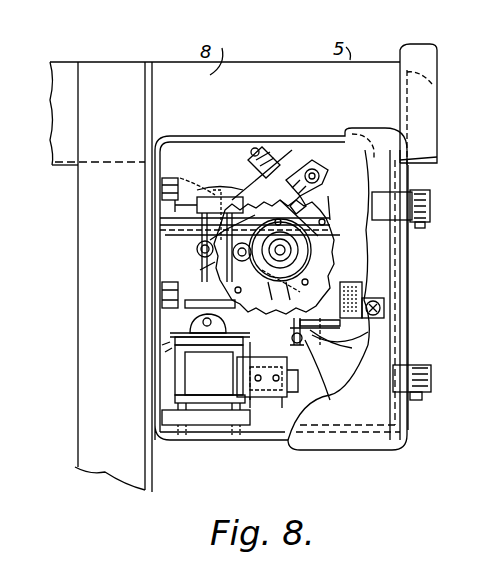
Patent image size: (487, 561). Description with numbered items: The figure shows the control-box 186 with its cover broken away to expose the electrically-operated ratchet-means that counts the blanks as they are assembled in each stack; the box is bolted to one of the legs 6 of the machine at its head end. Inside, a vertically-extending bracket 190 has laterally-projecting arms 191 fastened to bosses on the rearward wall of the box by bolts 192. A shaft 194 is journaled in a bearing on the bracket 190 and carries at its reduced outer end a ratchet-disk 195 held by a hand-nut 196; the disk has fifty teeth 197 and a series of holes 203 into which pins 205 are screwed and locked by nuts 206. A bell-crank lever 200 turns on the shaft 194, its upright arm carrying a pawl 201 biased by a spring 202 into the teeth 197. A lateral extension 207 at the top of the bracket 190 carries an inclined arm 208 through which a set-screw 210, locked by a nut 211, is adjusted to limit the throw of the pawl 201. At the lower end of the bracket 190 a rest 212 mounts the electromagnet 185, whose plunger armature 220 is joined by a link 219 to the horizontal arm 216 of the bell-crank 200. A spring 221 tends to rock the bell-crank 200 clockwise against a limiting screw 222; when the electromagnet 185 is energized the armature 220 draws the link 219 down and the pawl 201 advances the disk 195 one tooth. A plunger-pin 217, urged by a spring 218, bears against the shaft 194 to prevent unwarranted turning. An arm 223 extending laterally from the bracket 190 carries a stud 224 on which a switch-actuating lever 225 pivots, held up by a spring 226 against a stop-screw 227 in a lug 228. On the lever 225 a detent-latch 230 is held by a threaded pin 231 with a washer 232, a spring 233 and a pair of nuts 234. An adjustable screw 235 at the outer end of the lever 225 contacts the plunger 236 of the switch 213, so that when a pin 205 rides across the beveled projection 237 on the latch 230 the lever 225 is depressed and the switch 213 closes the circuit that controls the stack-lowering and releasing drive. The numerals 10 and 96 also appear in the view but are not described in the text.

The leg 6 is at (78, 275).
The frame member 10 is at (432, 84).
The bracket 96 is at (430, 55).
The electromagnet 185 is at (212, 370).
The control-box 186 is at (266, 457).
The bracket 190 is at (212, 205).
The laterally-projecting arms 191 is at (338, 227).
The bolts 192 is at (370, 262).
The shaft 194 is at (215, 240).
The ratchet-disk 195 is at (336, 243).
The hand-nut 196 is at (338, 258).
The teeth 197 is at (200, 270).
The bell-crank lever 200 is at (318, 196).
The pawl 201 is at (315, 186).
The spring 202 is at (300, 172).
The holes 203 is at (301, 289).
The pins 205 is at (283, 200).
The nuts 206 is at (248, 195).
The lateral extension 207 is at (232, 195).
The inclined arm 208 is at (262, 182).
The set-screw 210 is at (262, 150).
The nut 211 is at (259, 150).
The rest 212 is at (215, 420).
The switch 213 is at (290, 397).
The horizontal arm 216 is at (198, 250).
The plunger-pin 217 is at (316, 215).
The spring 218 is at (338, 275).
The link 219 is at (205, 305).
The plunger armature 220 is at (180, 337).
The spring 221 is at (205, 235).
The screw 222 is at (207, 220).
The arm 223 is at (368, 306).
The stud 224 is at (384, 310).
The switch-actuating lever 225 is at (375, 330).
The spring 226 is at (395, 278).
The stop-screw 227 is at (372, 336).
The lug 228 is at (375, 342).
The detent-latch 230 is at (335, 340).
The threaded pin 231 is at (322, 350).
The washer 232 is at (292, 440).
The spring 233 is at (360, 372).
The nuts 234 is at (328, 345).
The adjustable screw 235 is at (175, 340).
The plunger 236 is at (175, 348).
The beveled projection 237 is at (432, 373).